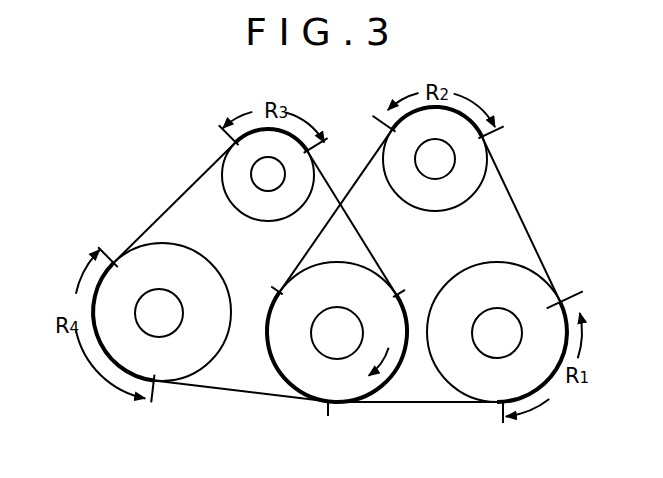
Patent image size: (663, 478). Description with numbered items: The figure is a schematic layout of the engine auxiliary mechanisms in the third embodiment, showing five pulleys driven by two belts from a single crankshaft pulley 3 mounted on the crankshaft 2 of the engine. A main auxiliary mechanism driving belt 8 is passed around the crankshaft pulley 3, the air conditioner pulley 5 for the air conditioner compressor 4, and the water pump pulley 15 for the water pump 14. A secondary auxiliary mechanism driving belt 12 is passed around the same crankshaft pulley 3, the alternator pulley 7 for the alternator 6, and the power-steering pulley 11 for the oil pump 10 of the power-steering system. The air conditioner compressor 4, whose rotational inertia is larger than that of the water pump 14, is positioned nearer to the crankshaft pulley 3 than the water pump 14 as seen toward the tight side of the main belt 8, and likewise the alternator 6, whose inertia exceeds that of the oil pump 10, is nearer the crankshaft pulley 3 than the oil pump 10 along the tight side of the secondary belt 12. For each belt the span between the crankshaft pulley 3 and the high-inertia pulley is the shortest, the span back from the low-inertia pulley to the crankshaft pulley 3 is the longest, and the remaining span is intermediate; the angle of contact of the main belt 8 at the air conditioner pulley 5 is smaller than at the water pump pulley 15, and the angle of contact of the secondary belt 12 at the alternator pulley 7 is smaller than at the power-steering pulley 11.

The crankshaft 2 is at (331, 325).
The crankshaft pulley 3 is at (276, 362).
The air conditioner compressor 4 is at (492, 320).
The air conditioner pulley 5 is at (556, 302).
The alternator 6 is at (252, 178).
The alternator pulley 7 is at (237, 159).
The main auxiliary mechanism driving belt 8 is at (353, 190).
The oil pump 10 is at (170, 311).
The power-steering pulley 11 is at (134, 262).
The secondary auxiliary mechanism driving belt 12 is at (165, 212).
The water pump 14 is at (440, 165).
The water pump pulley 15 is at (472, 160).